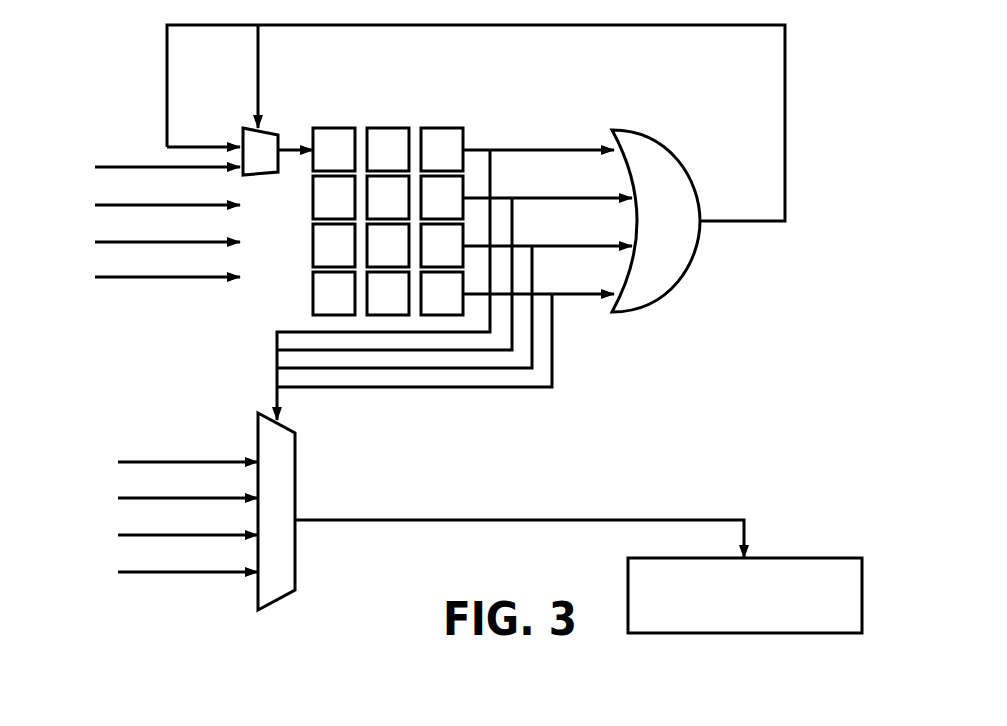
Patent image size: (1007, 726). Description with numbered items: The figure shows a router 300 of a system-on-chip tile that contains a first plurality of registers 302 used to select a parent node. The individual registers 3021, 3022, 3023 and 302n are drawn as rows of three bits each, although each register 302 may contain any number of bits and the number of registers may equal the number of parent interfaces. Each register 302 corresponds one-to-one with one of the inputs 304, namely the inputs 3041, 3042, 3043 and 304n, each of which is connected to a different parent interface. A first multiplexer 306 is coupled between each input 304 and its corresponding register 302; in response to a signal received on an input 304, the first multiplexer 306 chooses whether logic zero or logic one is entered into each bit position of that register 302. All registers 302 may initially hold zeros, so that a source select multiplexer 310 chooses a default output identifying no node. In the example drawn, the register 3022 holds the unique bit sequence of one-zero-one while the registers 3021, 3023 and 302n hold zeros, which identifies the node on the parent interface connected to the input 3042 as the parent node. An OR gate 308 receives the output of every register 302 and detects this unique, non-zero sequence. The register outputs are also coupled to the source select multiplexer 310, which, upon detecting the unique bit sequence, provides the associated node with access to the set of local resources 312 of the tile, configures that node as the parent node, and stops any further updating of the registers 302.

The router 300 is at (845, 110).
The register 302 is at (347, 227).
The first register 3021 is at (463, 123).
The second register 3022 is at (313, 180).
The third register 3023 is at (313, 252).
The nth register 302n is at (313, 293).
The input 304 is at (144, 347).
The first input 3041 is at (128, 167).
The second input 3042 is at (122, 205).
The third input 3043 is at (128, 242).
The nth input 304n is at (120, 277).
The first multiplexer 306 is at (277, 130).
The OR gate 308 is at (637, 130).
The source select multiplexer 310 is at (295, 433).
The local resources 312 is at (847, 558).